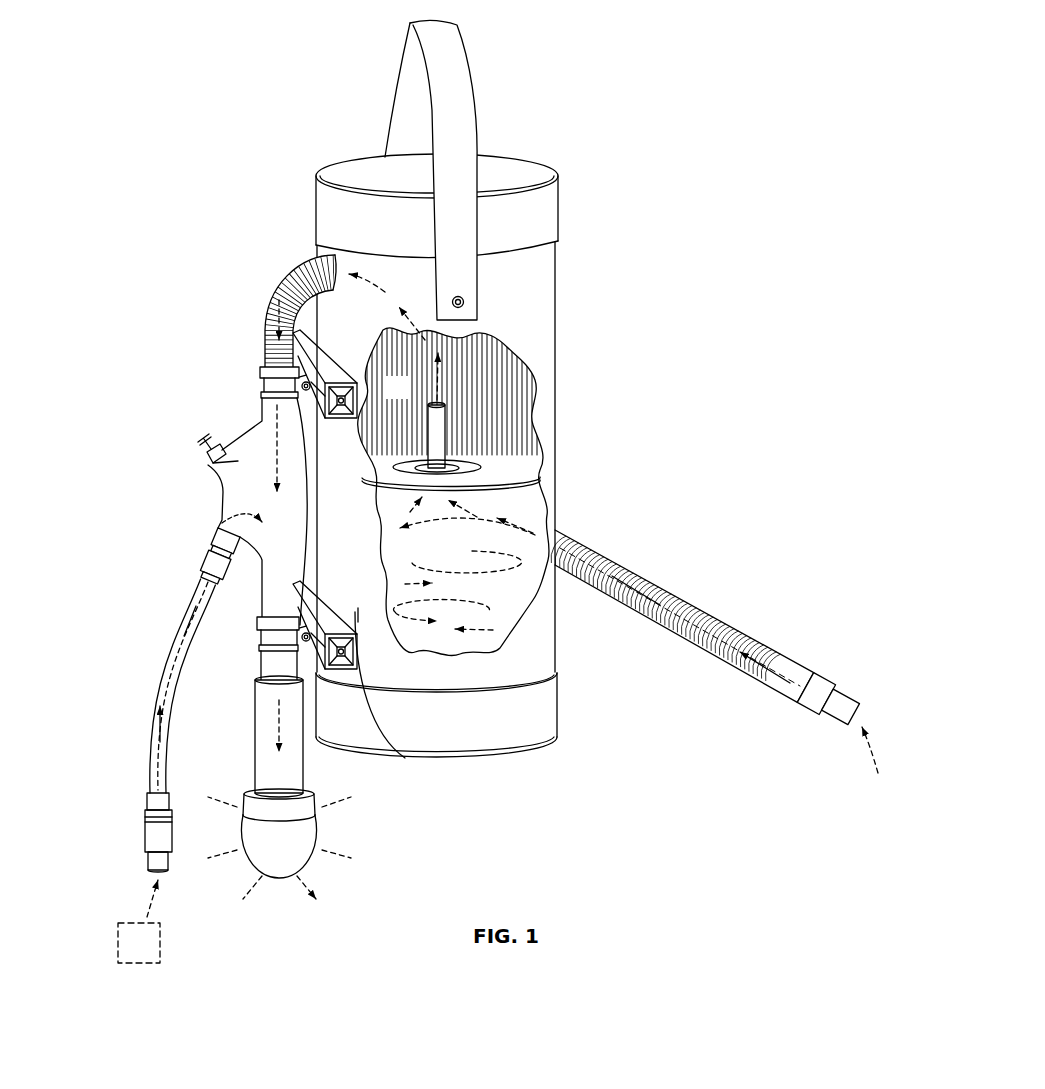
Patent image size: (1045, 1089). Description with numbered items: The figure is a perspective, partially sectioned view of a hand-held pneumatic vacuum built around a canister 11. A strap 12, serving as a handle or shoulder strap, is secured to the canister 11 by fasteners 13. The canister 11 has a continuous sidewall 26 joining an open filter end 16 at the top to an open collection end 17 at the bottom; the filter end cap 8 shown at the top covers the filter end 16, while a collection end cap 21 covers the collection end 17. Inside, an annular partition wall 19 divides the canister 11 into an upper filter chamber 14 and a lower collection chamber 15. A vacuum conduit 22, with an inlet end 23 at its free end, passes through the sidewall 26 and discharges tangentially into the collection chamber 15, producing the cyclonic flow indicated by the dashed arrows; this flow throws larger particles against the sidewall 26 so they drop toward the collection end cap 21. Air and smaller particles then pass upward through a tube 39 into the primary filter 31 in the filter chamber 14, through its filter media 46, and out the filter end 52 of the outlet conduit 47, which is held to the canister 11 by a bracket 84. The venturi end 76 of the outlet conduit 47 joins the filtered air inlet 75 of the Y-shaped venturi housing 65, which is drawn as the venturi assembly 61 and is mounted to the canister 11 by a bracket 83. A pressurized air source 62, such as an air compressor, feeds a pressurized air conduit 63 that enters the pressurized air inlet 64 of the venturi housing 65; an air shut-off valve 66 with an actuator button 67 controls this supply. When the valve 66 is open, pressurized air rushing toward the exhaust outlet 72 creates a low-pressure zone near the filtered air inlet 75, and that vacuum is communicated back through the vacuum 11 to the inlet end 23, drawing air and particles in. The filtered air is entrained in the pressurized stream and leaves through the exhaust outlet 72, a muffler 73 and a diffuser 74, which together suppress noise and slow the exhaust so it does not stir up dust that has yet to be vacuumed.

The lid 8 is at (558, 180).
The canister 11 is at (475, 401).
The strap 12 is at (451, 168).
The fasteners 13 is at (463, 298).
The filter chamber 14 is at (471, 406).
The collection chamber 15 is at (530, 534).
The filter end 16 is at (557, 246).
The collection end 17 is at (557, 673).
The annular partition wall 19 is at (515, 481).
The collection end cap 21 is at (474, 701).
The vacuum conduit 22 is at (727, 646).
The inlet end 23 is at (847, 691).
The continuous sidewall 26 is at (556, 345).
The primary filter 31 is at (481, 465).
The tube 39 is at (442, 437).
The filter media 46 is at (408, 398).
The outlet conduit 47 is at (262, 284).
The filter end 52 is at (320, 253).
The Y-fitting 61 is at (208, 493).
The pressurized air source 62 is at (160, 958).
The pressurized air conduit 63 is at (152, 742).
The pressurized air inlet 64 is at (218, 528).
The venturi housing 65 is at (176, 458).
The air shut-off valve 66 is at (203, 463).
The actuator button 67 is at (203, 446).
The exhaust outlet 72 is at (260, 639).
The muffler 73 is at (254, 734).
The diffuser 74 is at (318, 832).
The filtered air inlet 75 is at (262, 397).
The venturi end 76 is at (262, 369).
The bracket 83 is at (395, 696).
The bracket 84 is at (335, 362).